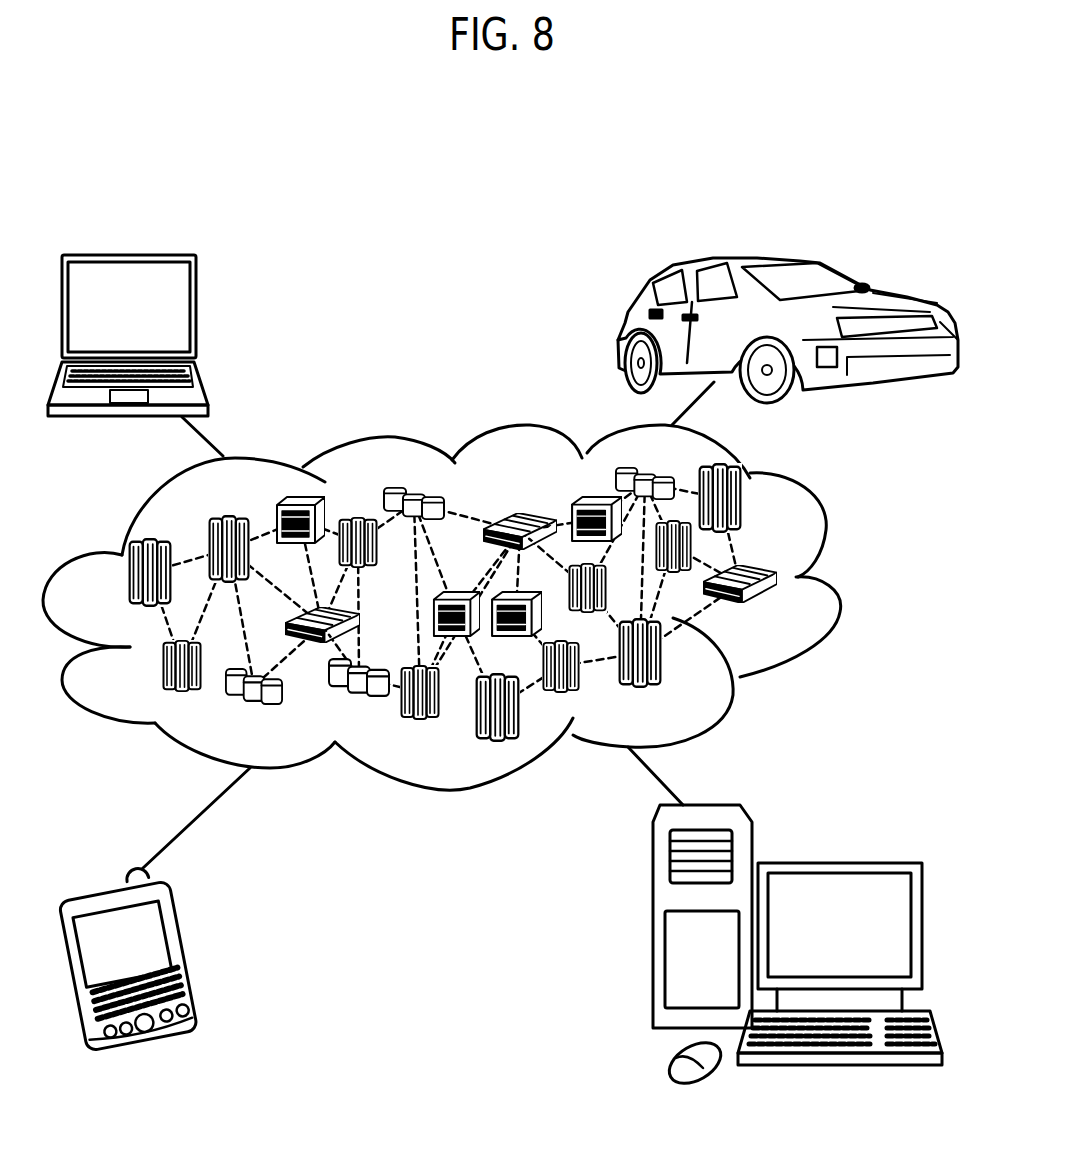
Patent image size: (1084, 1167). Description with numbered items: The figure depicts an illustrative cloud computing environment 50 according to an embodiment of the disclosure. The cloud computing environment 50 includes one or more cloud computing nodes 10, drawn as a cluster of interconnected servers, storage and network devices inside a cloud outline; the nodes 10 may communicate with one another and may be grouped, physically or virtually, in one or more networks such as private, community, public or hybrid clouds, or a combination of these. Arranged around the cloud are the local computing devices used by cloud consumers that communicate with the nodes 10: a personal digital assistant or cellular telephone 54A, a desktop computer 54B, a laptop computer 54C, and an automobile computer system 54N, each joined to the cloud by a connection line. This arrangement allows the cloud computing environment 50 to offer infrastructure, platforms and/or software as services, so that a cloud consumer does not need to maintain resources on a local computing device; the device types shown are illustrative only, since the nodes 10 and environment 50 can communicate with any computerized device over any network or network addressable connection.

The cloud computing nodes 10 is at (790, 613).
The cloud computing environment 50 is at (836, 579).
The personal digital assistant or cellular telephone 54A is at (190, 957).
The desktop computer 54B is at (838, 862).
The laptop computer 54C is at (196, 318).
The automobile computer system 54N is at (620, 330).